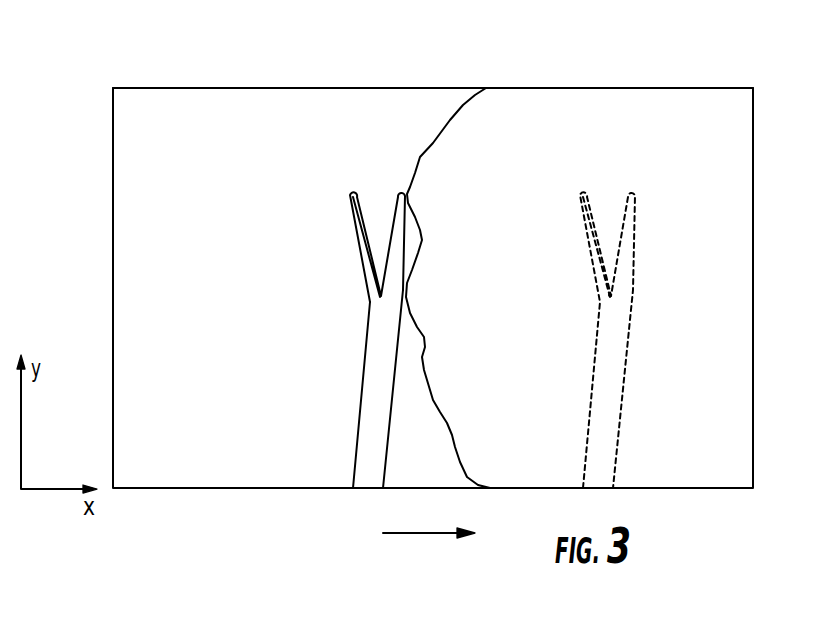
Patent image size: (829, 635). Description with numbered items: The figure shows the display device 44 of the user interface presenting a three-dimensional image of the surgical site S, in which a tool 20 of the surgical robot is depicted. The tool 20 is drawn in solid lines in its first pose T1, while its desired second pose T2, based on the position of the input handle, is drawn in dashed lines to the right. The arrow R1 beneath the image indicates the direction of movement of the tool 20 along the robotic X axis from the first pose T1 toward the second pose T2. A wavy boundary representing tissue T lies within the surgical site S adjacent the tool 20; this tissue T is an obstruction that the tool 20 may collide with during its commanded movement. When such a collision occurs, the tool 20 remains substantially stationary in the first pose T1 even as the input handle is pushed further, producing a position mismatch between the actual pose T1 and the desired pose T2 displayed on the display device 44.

The surgical site S is at (150, 151).
The display device 44 is at (645, 88).
The tissue T is at (528, 110).
The first pose T1 is at (363, 262).
The second pose T2 is at (632, 332).
The tool 20 is at (367, 393).
The arrow R1 is at (429, 554).